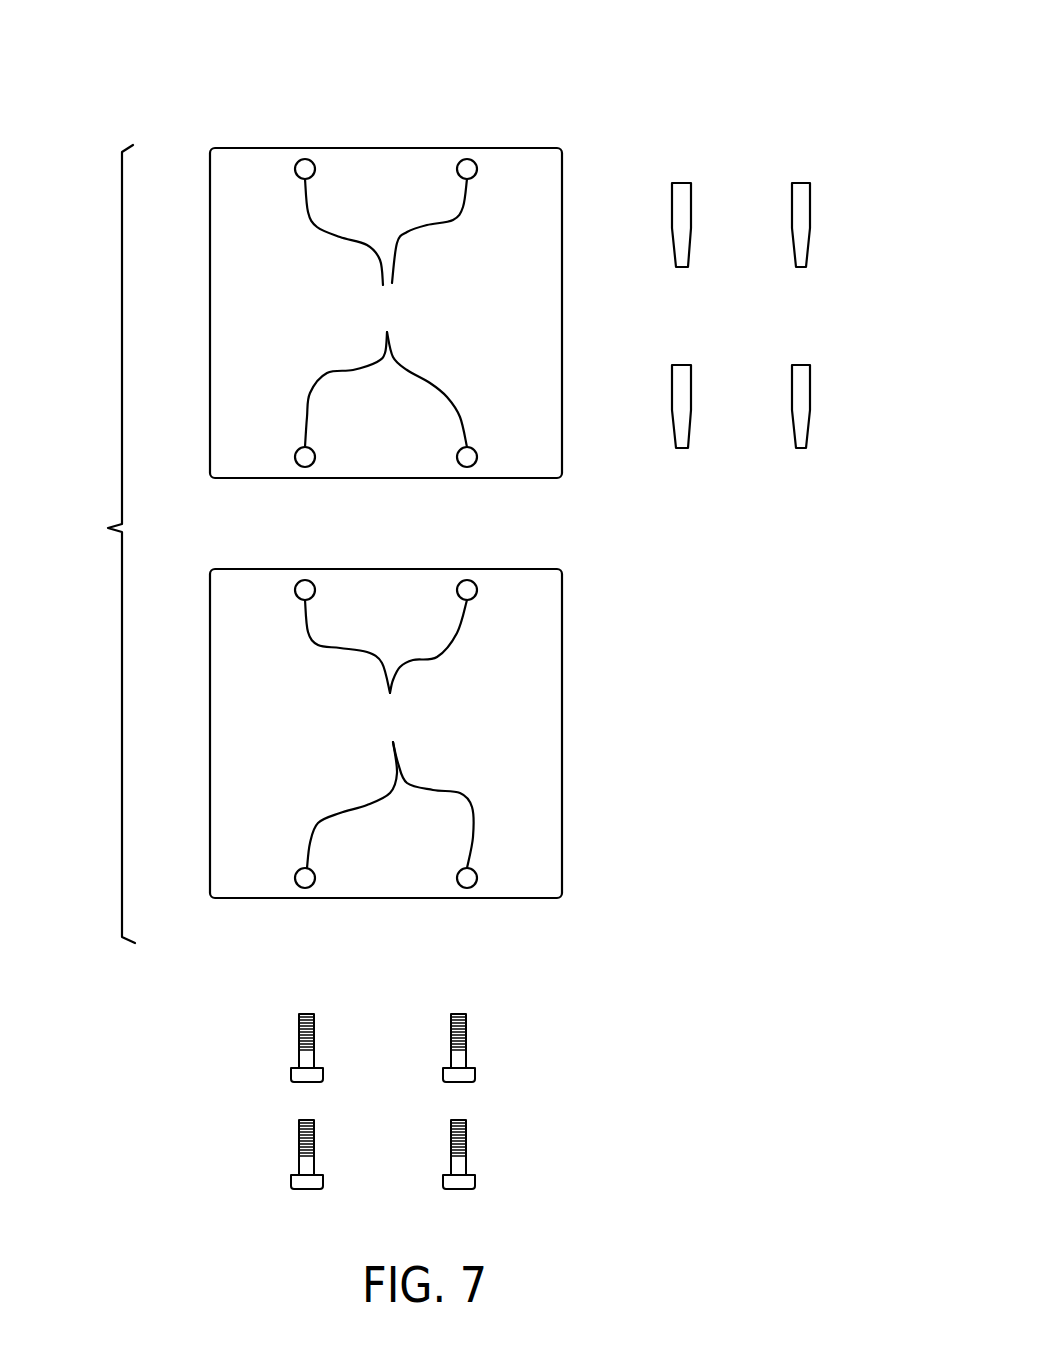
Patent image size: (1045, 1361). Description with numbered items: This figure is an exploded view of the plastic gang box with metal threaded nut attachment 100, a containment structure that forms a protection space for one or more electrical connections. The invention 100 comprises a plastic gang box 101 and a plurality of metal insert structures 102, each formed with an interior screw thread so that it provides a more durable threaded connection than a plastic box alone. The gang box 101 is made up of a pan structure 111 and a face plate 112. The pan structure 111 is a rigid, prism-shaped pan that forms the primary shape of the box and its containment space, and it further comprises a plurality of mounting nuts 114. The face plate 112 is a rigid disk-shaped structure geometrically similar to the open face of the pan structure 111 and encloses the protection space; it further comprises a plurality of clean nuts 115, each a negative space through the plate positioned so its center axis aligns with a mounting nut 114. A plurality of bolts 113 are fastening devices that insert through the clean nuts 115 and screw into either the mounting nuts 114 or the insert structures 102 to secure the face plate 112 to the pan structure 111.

The plastic gang box with metal threaded nut attachment 100 is at (172, 75).
The gang box 101 is at (92, 544).
The plurality of insert structures 102 is at (842, 168).
The pan structure 111 is at (387, 148).
The face plate 112 is at (562, 733).
The plurality of bolts 113 is at (507, 1203).
The plurality of mounting nuts 114 is at (386, 313).
The plurality of clean nuts 115 is at (389, 734).